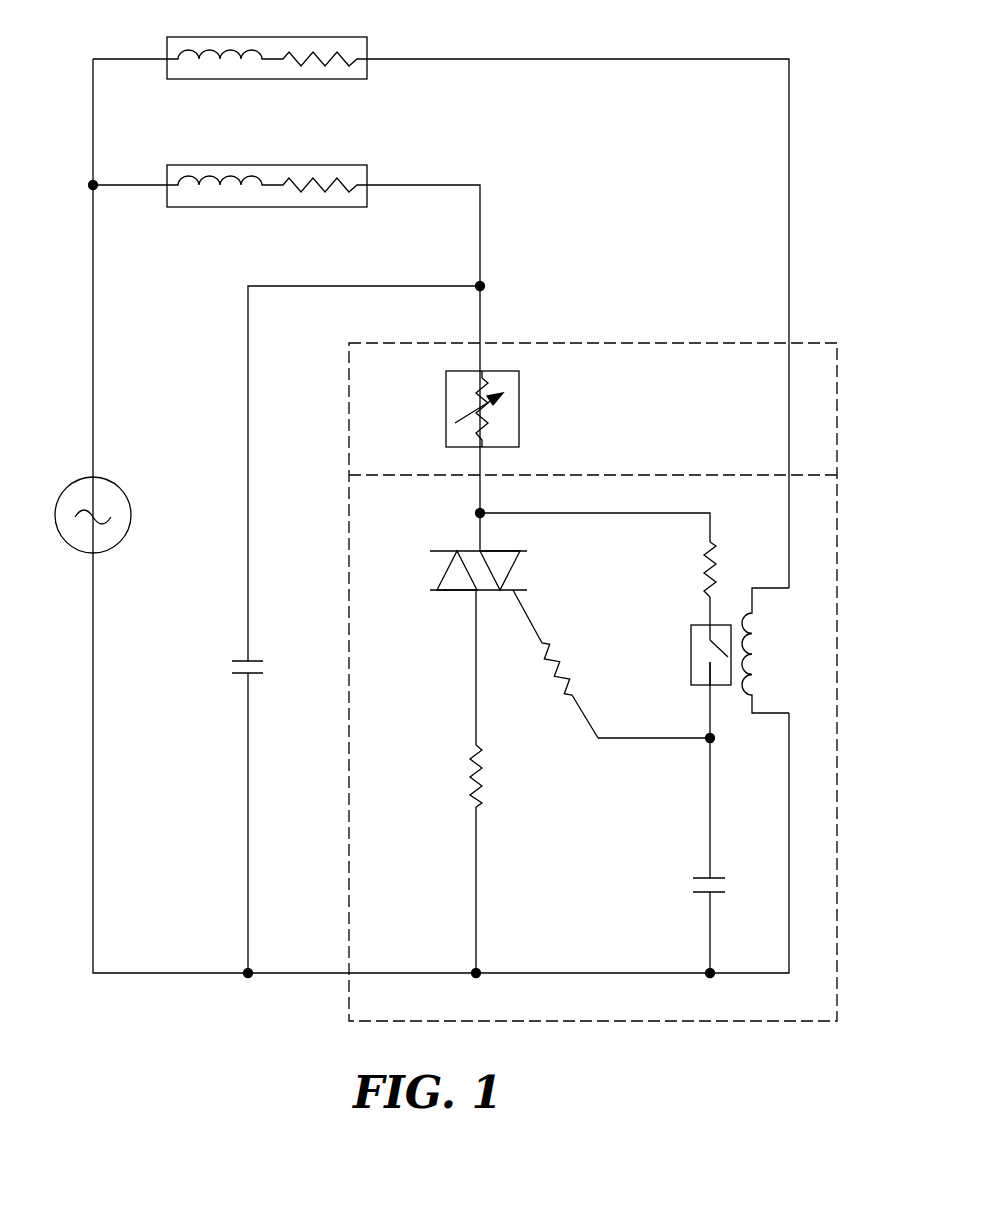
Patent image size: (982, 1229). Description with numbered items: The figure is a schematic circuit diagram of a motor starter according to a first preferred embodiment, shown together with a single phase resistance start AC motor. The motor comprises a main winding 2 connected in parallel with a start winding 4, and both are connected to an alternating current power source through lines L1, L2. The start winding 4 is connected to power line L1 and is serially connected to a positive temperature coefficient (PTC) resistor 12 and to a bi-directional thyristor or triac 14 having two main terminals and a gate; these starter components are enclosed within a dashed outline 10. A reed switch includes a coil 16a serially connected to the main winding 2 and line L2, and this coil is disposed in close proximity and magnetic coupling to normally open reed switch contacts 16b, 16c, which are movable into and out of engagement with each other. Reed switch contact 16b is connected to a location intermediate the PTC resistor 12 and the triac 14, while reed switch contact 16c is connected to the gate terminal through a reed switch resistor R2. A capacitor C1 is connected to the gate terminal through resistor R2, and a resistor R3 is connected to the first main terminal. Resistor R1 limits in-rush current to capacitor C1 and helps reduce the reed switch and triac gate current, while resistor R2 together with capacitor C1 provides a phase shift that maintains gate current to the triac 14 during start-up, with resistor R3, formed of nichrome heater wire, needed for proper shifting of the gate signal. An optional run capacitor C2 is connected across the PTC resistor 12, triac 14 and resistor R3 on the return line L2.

The main winding 2 is at (367, 40).
The start winding 4 is at (367, 165).
The control circuit 10 is at (664, 343).
The positive temperature coefficient (PTC) resistor 12 is at (519, 380).
The bi-directional thyristor or triac 14 is at (443, 568).
The coil 16a is at (752, 657).
The reed switch contact 16b is at (712, 646).
The reed switch contact 16c is at (712, 671).
The line L1 is at (93, 408).
The line L2 is at (93, 745).
The capacitor C1 is at (690, 888).
The run capacitor C2 is at (227, 668).
The resistor R1 is at (691, 569).
The reed switch resistor R2 is at (555, 664).
The resistor R3 is at (459, 776).